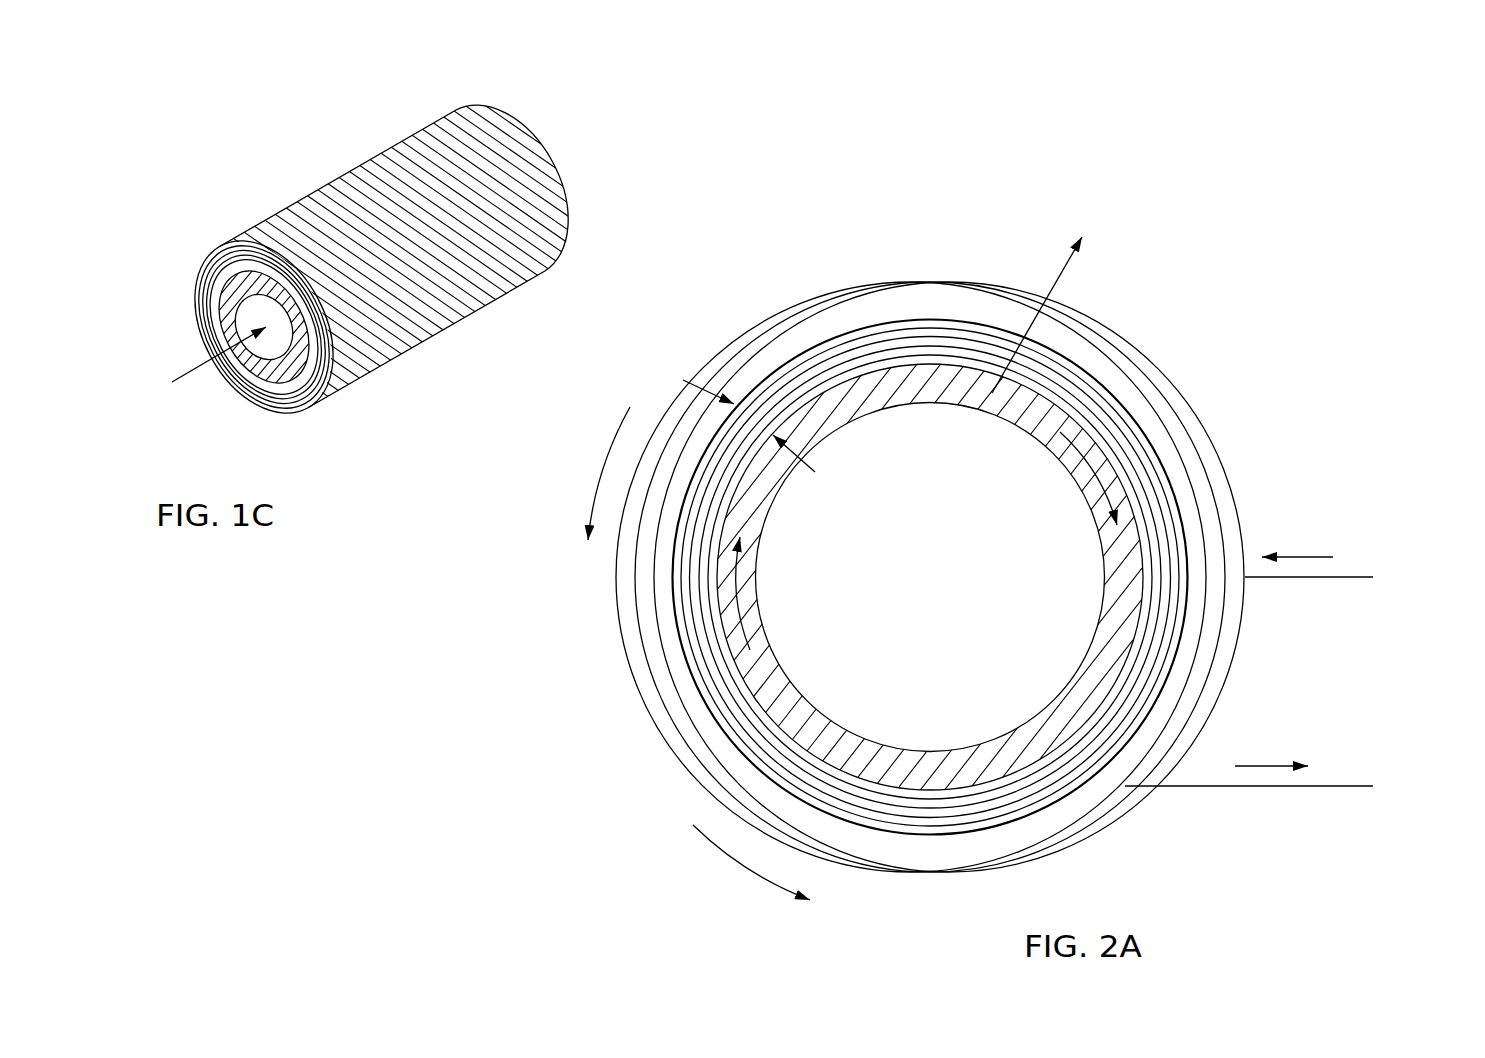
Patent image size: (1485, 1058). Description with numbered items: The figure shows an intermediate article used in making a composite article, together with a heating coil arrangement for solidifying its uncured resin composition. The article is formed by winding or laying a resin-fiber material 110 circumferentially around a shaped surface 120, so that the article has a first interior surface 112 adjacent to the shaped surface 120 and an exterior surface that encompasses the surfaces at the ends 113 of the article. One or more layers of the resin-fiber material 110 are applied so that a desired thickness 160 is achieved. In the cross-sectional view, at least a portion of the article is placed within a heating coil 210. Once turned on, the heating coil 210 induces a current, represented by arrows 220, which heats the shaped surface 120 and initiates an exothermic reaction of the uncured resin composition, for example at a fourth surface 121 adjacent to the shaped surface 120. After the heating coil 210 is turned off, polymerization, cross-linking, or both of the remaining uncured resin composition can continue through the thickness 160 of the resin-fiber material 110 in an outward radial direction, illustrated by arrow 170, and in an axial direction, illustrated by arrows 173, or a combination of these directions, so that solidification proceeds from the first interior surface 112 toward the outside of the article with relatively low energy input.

In FIG. 1C, the resin-fiber material 110 is at (213, 263).
In FIG. 2A, the resin-fiber material 110 is at (738, 712).
In FIG. 1C, the first interior surface 112 is at (344, 172).
In FIG. 1C, the ends 113 is at (526, 100).
In FIG. 1C, the shaped surface 120 is at (230, 328).
In FIG. 2A, the shaped surface 120 is at (765, 688).
In FIG. 2A, the fourth surface 121 is at (830, 392).
In FIG. 2A, the thickness 160 is at (683, 380).
In FIG. 2A, the arrow (outward radial direction) 170 is at (1066, 276).
In FIG. 1C, the arrows (axial direction) 173 is at (192, 371).
In FIG. 2A, the heating coil 210 is at (1055, 847).
In FIG. 2A, the arrows (induced current) 220 is at (612, 445).